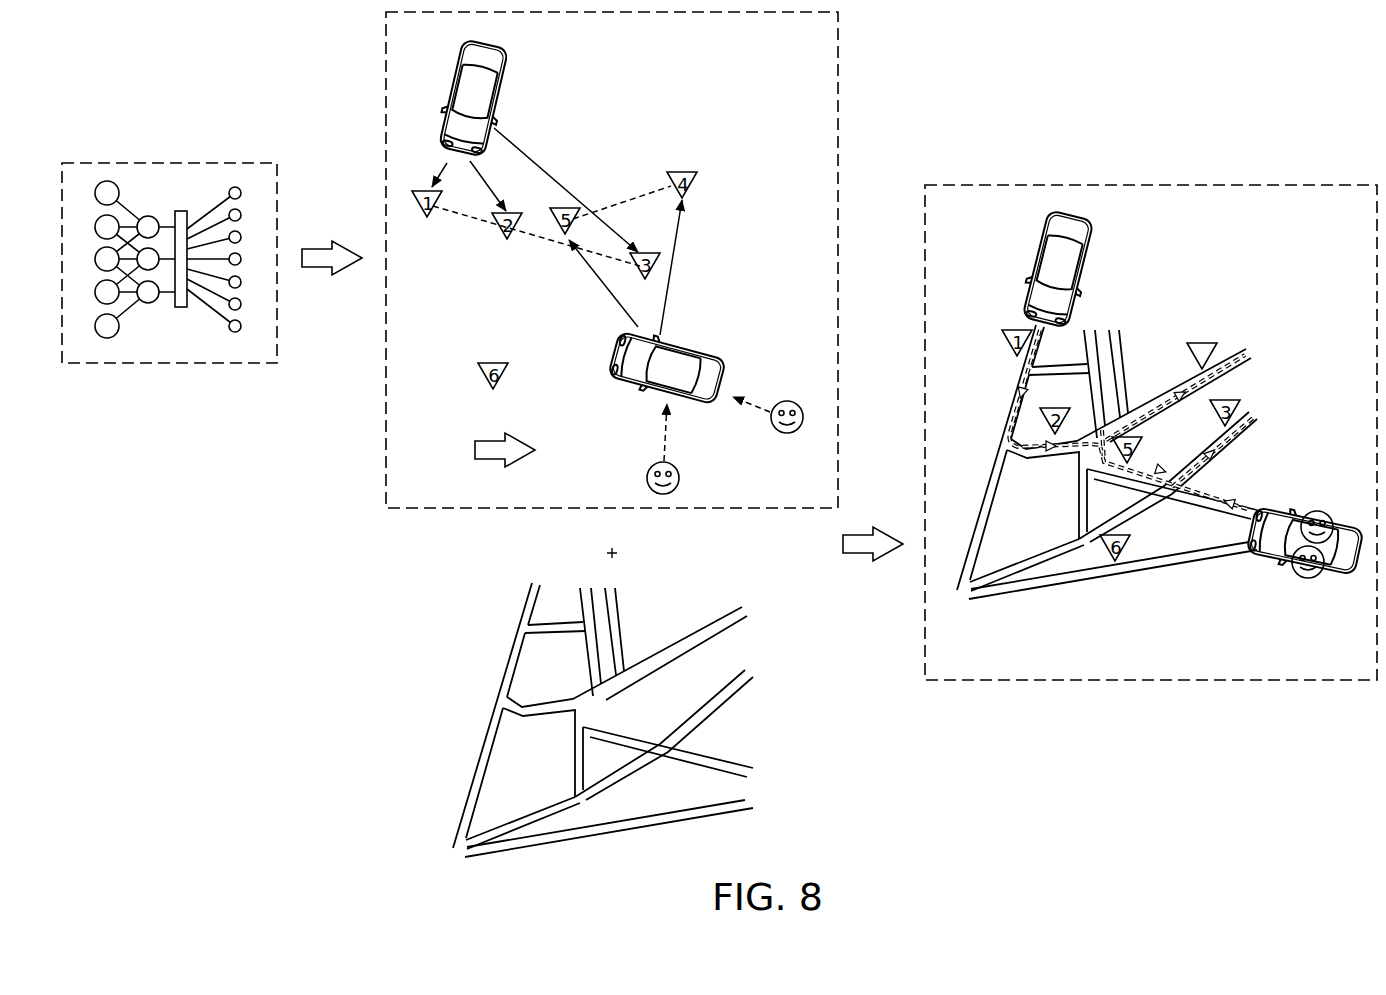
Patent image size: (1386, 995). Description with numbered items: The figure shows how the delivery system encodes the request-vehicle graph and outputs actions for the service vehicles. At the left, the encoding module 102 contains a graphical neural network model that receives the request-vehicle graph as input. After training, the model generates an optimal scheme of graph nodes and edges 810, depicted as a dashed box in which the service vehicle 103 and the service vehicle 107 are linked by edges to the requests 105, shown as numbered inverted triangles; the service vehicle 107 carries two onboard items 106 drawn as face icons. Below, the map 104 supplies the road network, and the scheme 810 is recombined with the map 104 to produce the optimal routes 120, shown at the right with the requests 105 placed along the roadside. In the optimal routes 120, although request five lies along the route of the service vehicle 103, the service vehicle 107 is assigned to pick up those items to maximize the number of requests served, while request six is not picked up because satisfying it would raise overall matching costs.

The encoding module 102 is at (191, 356).
The service vehicle 103 is at (506, 53).
The map 104 is at (752, 793).
The requests 105 is at (1216, 343).
The onboard items 106 is at (1300, 580).
The service vehicle 107 is at (633, 383).
The optimal scheme of graph nodes and edges 810 is at (838, 149).
The optimal routes 120 is at (1208, 184).